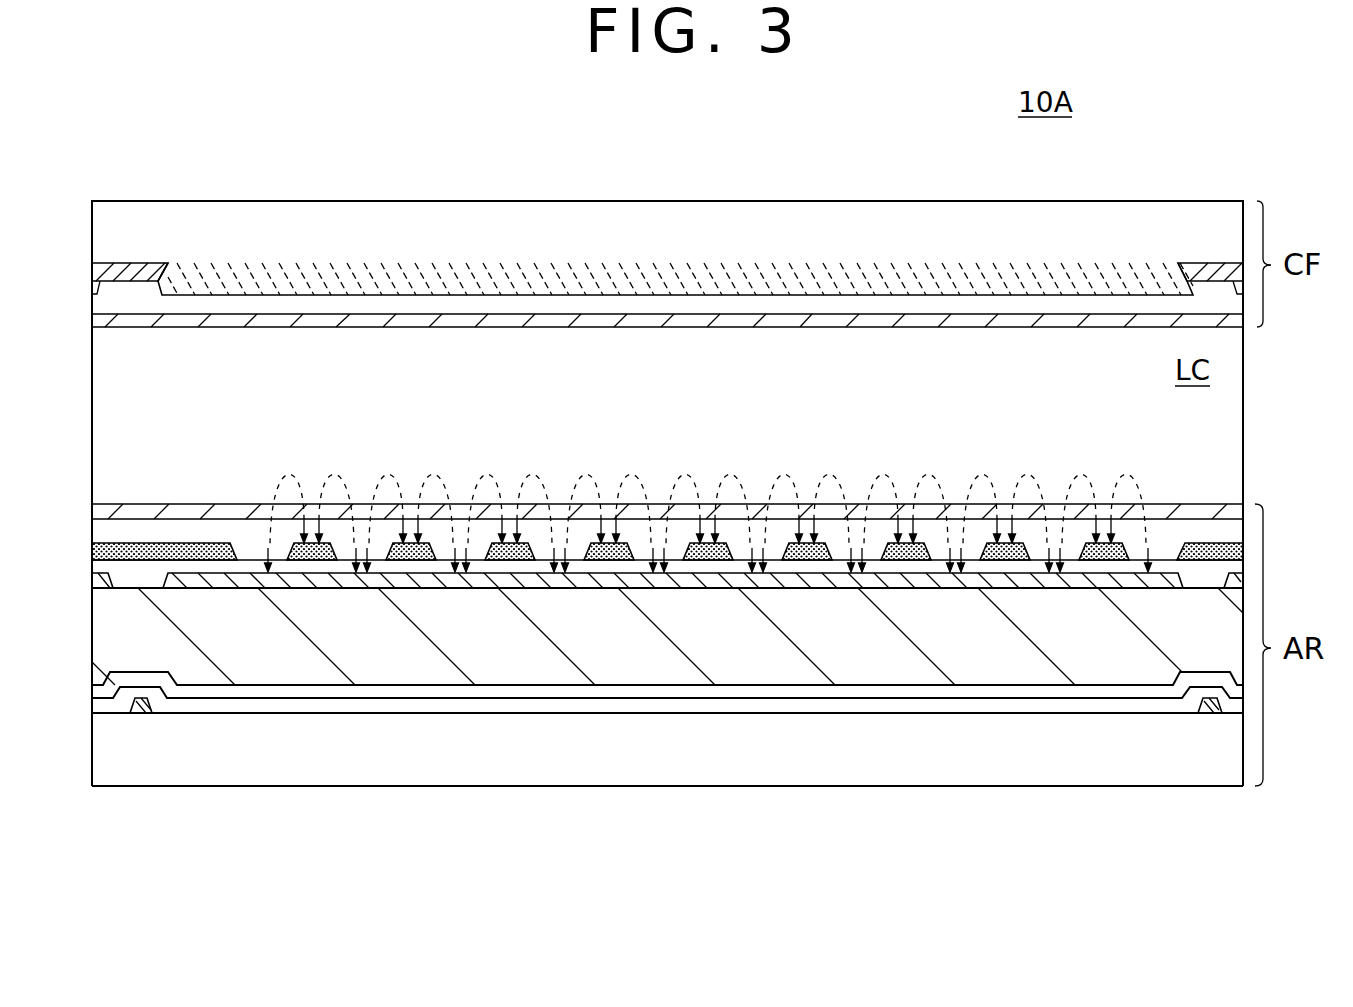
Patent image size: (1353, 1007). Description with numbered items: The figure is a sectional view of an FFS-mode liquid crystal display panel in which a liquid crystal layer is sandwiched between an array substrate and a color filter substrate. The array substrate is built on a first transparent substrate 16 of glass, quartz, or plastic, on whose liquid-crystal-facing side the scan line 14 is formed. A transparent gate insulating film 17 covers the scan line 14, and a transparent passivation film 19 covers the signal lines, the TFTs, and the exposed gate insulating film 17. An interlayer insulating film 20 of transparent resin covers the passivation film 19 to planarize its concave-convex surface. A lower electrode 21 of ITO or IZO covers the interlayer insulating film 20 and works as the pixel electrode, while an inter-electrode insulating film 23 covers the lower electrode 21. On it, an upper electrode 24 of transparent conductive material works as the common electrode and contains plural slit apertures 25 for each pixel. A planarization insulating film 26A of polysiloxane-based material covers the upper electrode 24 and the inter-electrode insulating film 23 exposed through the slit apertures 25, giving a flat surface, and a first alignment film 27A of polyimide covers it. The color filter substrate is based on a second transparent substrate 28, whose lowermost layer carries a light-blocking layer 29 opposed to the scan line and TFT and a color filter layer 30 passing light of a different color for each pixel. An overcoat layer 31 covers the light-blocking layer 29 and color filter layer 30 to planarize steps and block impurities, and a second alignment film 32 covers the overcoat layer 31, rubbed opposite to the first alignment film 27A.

The scan line 14 is at (140, 712).
The first transparent substrate 16 is at (645, 750).
The gate insulating film 17 is at (540, 706).
The passivation film 19 is at (445, 690).
The interlayer insulating film 20 is at (282, 645).
The lower electrode 21 is at (1011, 580).
The inter-electrode insulating film 23 is at (905, 567).
The upper electrode 24 is at (811, 558).
The slit apertures 25 is at (640, 553).
The planarization insulating film 26A is at (147, 532).
The first alignment film 27A is at (232, 513).
The second transparent substrate 28 is at (575, 220).
The light-blocking layer 29 is at (143, 275).
The color filter layer 30 is at (468, 270).
The overcoat layer 31 is at (380, 303).
The second alignment film 32 is at (308, 313).